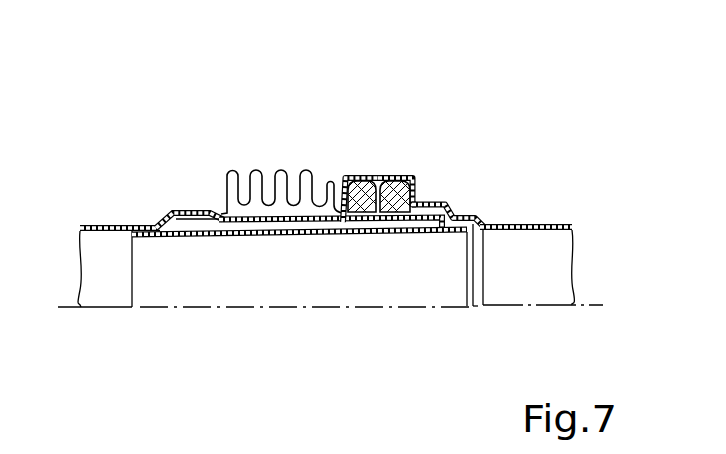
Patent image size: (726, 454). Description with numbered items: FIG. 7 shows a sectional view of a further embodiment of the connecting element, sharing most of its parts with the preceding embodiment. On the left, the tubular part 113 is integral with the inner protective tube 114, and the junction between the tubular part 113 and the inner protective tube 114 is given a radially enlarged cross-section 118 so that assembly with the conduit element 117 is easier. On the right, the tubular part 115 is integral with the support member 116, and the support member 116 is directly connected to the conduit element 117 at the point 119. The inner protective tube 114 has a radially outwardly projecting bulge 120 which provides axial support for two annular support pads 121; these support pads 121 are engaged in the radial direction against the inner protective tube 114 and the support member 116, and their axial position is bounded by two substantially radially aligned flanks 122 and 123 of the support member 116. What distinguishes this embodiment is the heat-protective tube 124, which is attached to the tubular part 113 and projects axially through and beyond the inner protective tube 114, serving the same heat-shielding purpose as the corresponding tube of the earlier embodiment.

The tubular part 113 is at (110, 224).
The inner protective tube 114 is at (273, 195).
The tubular part 115 is at (510, 215).
The support member 116 is at (394, 176).
The conduit element 117 is at (238, 170).
The radially enlarged cross-section 118 is at (178, 208).
The point 119 is at (331, 180).
The bulge 120 is at (377, 186).
The annular support pads 121 is at (406, 230).
The flank 122 is at (416, 195).
The flank 123 is at (345, 176).
The heat-protective tube 124 is at (263, 238).